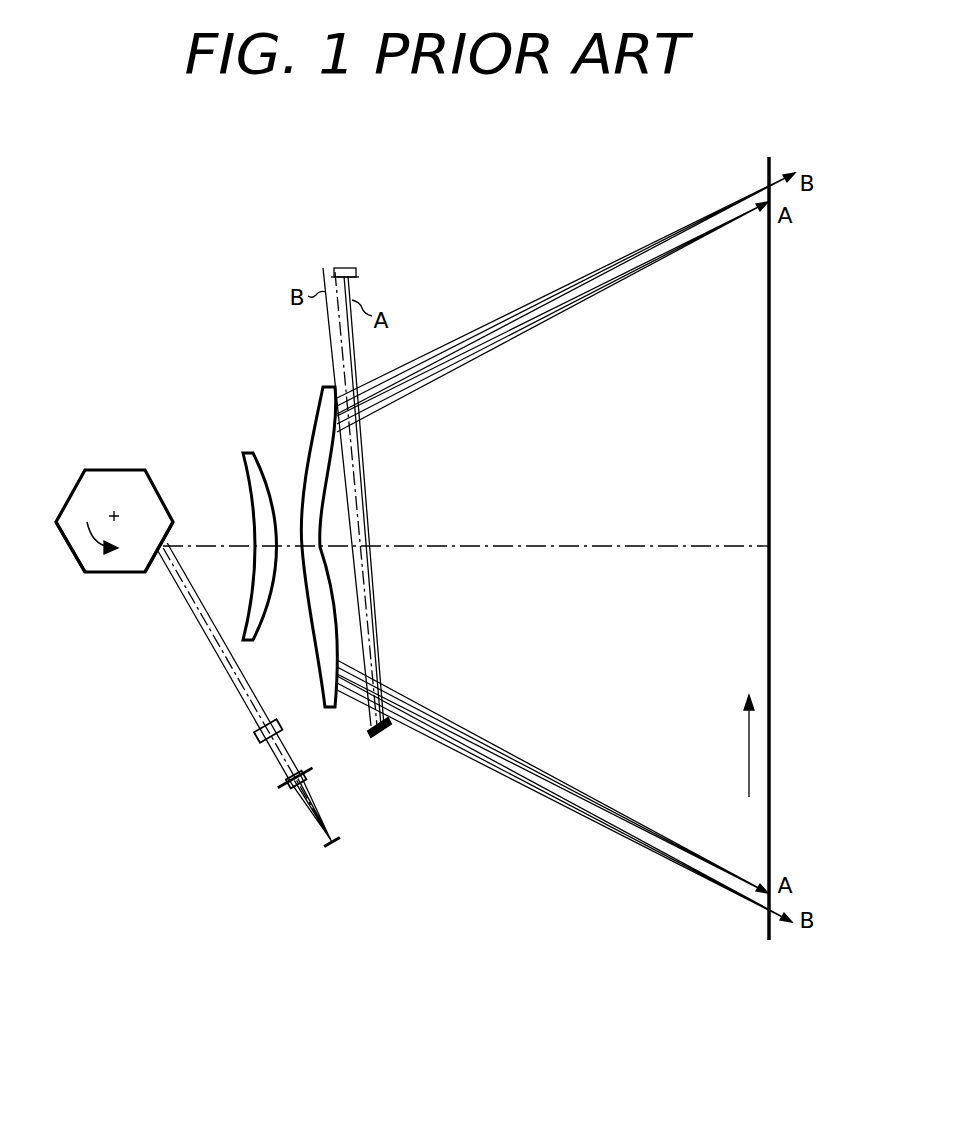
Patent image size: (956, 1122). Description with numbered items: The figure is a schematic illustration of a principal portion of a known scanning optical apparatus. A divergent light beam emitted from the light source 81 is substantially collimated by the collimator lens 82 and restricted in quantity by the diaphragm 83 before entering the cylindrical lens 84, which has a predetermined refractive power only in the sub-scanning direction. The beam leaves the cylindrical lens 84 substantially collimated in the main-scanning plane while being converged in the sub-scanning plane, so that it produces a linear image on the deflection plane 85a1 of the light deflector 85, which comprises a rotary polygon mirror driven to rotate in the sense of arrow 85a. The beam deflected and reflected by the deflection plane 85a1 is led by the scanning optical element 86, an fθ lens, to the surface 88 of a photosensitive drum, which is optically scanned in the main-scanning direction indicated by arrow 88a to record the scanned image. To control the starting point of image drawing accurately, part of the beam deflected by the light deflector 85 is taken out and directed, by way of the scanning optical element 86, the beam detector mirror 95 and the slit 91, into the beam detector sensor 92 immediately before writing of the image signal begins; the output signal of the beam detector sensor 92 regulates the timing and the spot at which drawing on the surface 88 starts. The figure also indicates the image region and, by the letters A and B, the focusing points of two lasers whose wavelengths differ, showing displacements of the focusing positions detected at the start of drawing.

The light source 81 is at (329, 853).
The collimator lens 82 is at (284, 780).
The diaphragm 83 is at (283, 790).
The cylindrical lens 84 is at (256, 734).
The light deflector 85 is at (119, 574).
The arrow indicating rotation sense of light deflector 85a is at (84, 540).
The deflection plane 85a1 is at (170, 540).
The scanning optical element (fθ lens) 86 is at (278, 473).
The surface of photosensitive drum 88 is at (770, 340).
The arrow indicating main-scanning direction 88a is at (748, 750).
The slit 91 is at (357, 279).
The beam detector (BD) sensor 92 is at (352, 266).
The beam detector (BD) mirror 95 is at (380, 738).